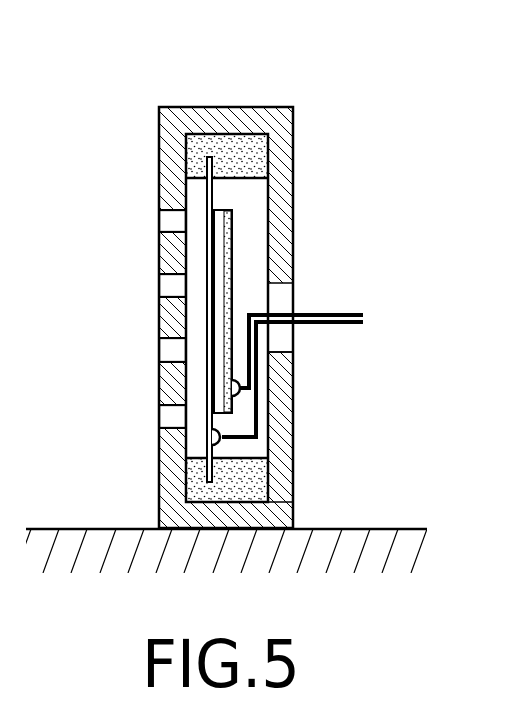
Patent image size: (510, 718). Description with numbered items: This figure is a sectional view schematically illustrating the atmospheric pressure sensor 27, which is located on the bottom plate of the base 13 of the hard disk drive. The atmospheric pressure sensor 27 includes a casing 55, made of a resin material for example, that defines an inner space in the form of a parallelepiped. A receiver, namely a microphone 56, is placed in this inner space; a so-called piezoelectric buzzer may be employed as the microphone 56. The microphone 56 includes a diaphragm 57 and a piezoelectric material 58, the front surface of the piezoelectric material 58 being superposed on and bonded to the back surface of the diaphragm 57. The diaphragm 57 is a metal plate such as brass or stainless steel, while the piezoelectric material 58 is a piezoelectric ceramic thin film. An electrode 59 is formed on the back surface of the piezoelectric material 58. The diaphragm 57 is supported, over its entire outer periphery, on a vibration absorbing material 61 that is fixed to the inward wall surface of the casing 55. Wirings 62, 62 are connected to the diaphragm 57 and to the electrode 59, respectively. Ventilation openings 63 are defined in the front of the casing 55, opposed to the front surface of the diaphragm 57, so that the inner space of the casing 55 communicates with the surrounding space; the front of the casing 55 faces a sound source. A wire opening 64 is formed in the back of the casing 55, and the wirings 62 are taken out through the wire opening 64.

The base 13 is at (388, 528).
The atmospheric pressure sensor 27 is at (405, 92).
The casing 55 is at (153, 140).
The microphone 56 is at (209, 155).
The diaphragm 57 is at (208, 191).
The piezoelectric material 58 is at (219, 233).
The electrode 59 is at (230, 273).
The vibration absorbing material 61 is at (245, 137).
The wirings 62 is at (345, 313).
The ventilation openings 63 is at (160, 228).
The wire opening 64 is at (285, 352).